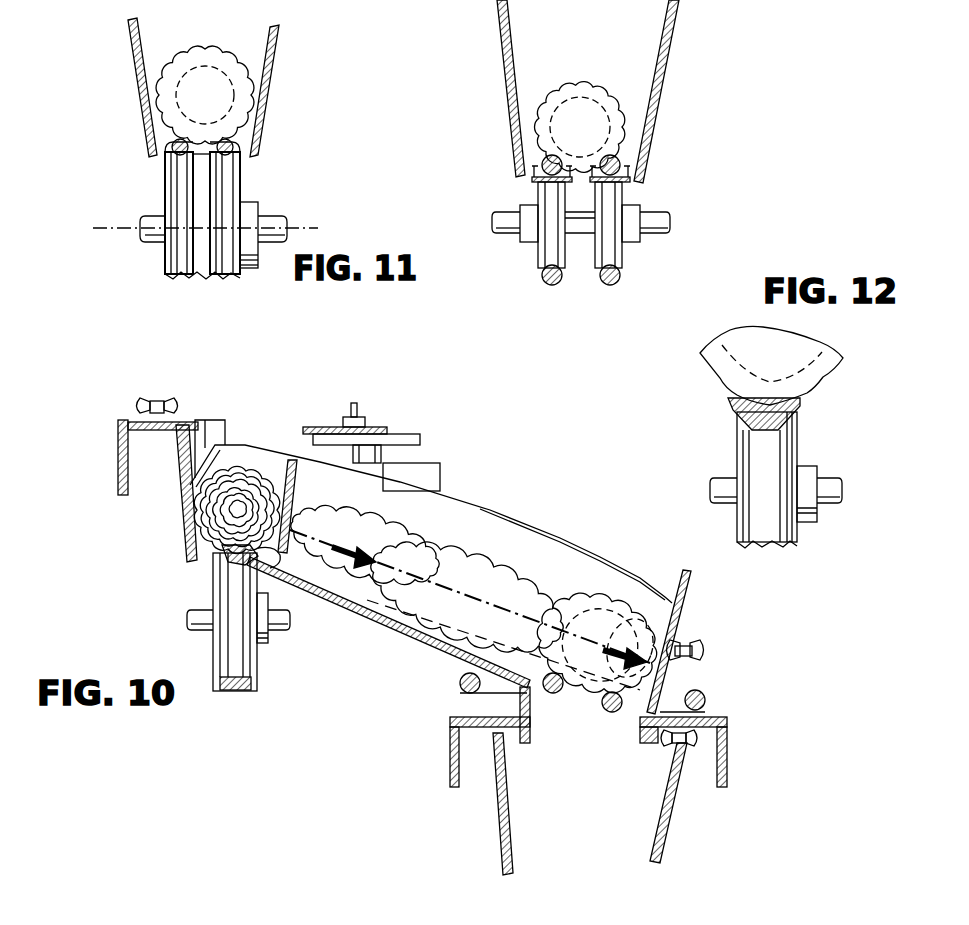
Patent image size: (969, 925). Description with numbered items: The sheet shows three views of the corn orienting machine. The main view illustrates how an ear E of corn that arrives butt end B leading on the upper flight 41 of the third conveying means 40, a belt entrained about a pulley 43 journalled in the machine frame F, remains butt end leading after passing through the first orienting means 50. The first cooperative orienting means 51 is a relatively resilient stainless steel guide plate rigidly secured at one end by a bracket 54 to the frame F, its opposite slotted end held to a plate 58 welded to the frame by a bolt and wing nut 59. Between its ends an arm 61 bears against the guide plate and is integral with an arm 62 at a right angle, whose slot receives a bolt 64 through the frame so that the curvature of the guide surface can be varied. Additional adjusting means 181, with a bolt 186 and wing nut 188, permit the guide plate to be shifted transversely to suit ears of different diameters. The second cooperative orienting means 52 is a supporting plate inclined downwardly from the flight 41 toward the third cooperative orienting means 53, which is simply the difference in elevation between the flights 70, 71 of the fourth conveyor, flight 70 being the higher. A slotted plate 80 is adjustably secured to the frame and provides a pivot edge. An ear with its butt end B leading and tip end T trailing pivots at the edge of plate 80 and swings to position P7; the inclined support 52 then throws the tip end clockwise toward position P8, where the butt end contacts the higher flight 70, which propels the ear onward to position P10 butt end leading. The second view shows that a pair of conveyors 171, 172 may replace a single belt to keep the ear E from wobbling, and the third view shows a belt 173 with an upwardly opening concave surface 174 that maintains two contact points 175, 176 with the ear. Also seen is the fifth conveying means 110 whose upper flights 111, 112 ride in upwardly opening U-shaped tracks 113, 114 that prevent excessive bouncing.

In FIG. 11, the conveyor 171 is at (165, 169).
In FIG. 11, the conveyor 172 is at (233, 160).
In FIG. 11, the ear of corn E is at (216, 58).
In FIG. 12, the ear of corn E is at (610, 97).
In FIG. 10, the ear of corn E is at (243, 470).
In FIG. 12, the butt end B is at (569, 100).
In FIG. 12, the fifth conveying means 110 is at (636, 130).
In FIG. 12, the upper flight 111 is at (617, 158).
In FIG. 12, the upper flight 112 is at (540, 158).
In FIG. 12, the U-shaped track 113 is at (628, 178).
In FIG. 12, the U-shaped track 114 is at (537, 178).
In FIG. 12, the bolt 186 is at (675, 91).
In FIG. 12, the wing nut 188 is at (572, 88).
In FIG. 10, the wing nut 188 is at (730, 733).
In FIG. 12, the belt 173 is at (745, 435).
In FIG. 12, the concave surface 174 is at (827, 378).
In FIG. 12, the contact point 175 is at (727, 386).
In FIG. 12, the contact point 176 is at (805, 398).
In FIG. 10, the adjusting means 181 is at (168, 386).
In FIG. 10, the machine frame F is at (118, 460).
In FIG. 10, the bracket 54 is at (225, 417).
In FIG. 10, the tip end T is at (262, 517).
In FIG. 10, the upper flight 41 is at (210, 573).
In FIG. 10, the pulley 43 is at (280, 656).
In FIG. 10, the third conveying means 40 is at (243, 706).
In FIG. 10, the first orienting means 50 is at (546, 482).
In FIG. 10, the first cooperative orienting means 51 is at (472, 531).
In FIG. 10, the second cooperative orienting means 52 is at (413, 642).
In FIG. 10, the third cooperative orienting means 53 is at (590, 712).
In FIG. 10, the plate 58 is at (691, 573).
In FIG. 10, the wing nut 59 is at (697, 643).
In FIG. 10, the arm 61 is at (442, 467).
In FIG. 10, the arm 62 is at (382, 432).
In FIG. 10, the bolt 64 is at (357, 405).
In FIG. 10, the flight 70 is at (460, 692).
In FIG. 10, the flight 71 is at (707, 697).
In FIG. 10, the plate 80 is at (302, 490).
In FIG. 10, the position P7 is at (383, 543).
In FIG. 10, the position P8 is at (477, 583).
In FIG. 10, the position P10 is at (590, 600).